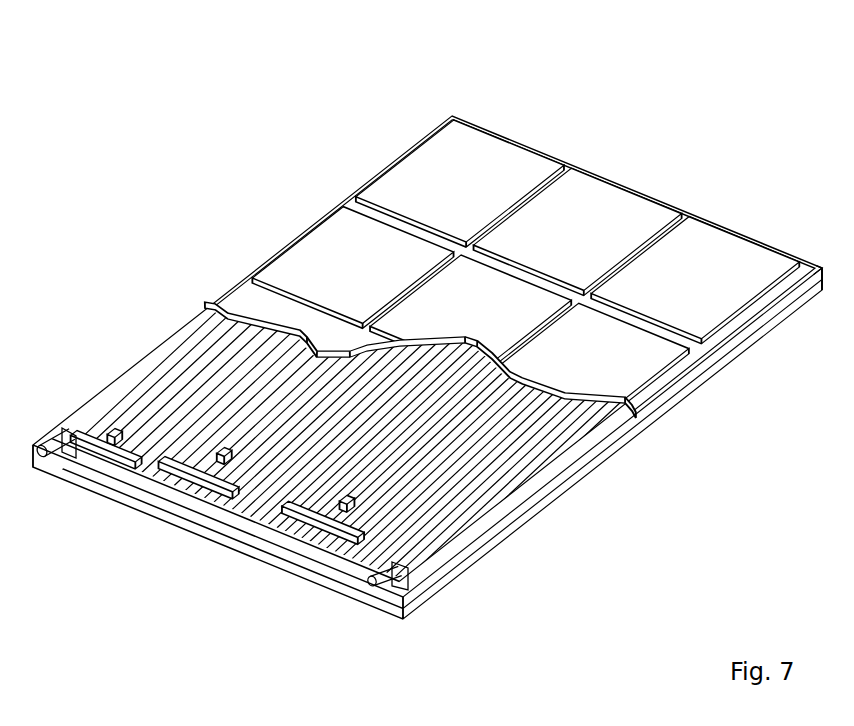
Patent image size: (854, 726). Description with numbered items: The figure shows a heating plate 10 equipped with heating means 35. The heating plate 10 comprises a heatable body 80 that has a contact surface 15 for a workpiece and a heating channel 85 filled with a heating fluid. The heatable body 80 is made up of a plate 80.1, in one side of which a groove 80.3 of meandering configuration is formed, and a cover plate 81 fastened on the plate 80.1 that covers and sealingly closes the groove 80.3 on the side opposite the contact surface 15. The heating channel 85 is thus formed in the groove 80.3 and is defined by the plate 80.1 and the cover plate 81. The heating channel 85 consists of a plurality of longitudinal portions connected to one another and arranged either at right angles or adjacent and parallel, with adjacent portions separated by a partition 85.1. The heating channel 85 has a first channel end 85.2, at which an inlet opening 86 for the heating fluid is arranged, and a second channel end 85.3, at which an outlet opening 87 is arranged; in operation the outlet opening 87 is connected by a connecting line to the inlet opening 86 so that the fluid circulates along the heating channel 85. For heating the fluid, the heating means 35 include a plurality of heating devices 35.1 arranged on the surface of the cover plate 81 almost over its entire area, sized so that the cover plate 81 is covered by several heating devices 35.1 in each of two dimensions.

The heating plate 10 is at (424, 350).
The contact surface 15 is at (428, 367).
The heating means 35 is at (508, 290).
The heating devices 35.1 is at (525, 272).
The heatable body 80 is at (428, 367).
The plate 80.1 is at (427, 356).
The groove 80.3 is at (339, 421).
The cover plate 81 is at (819, 278).
The heating channel 85 is at (351, 424).
The partition 85.1 is at (351, 424).
The first channel end 85.2 is at (413, 573).
The second channel end 85.3 is at (66, 452).
The inlet opening 86 is at (372, 576).
The outlet opening 87 is at (42, 452).